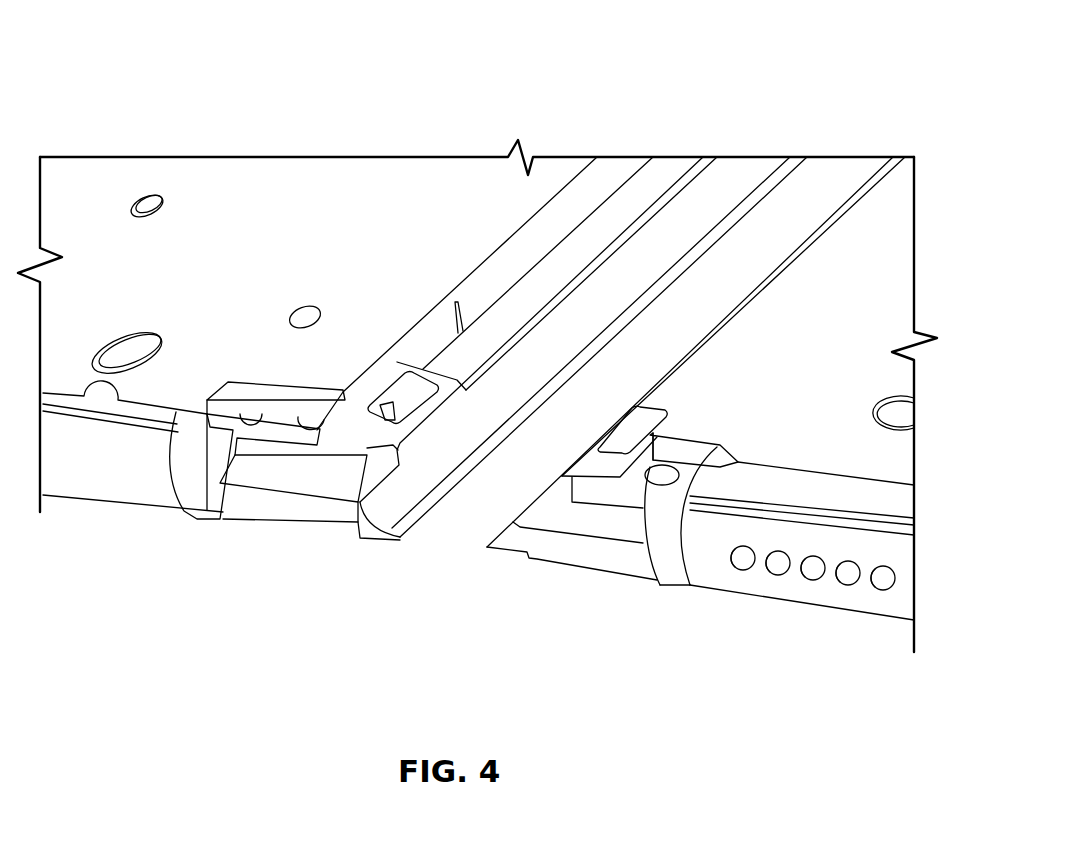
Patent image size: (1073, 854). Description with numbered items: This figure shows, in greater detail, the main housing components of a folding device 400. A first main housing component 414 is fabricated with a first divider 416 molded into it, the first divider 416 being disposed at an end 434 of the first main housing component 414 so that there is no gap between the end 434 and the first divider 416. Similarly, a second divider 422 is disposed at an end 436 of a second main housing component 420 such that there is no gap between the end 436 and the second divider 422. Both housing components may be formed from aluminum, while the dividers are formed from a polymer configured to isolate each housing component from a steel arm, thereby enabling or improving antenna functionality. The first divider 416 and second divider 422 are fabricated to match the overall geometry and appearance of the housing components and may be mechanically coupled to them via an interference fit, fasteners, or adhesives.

The folding device 400 is at (531, 351).
The first main housing component 414 is at (107, 503).
The first divider 416 is at (195, 507).
The end 434 is at (176, 412).
The second main housing component 420 is at (790, 600).
The second divider 422 is at (670, 585).
The end 436 is at (717, 448).